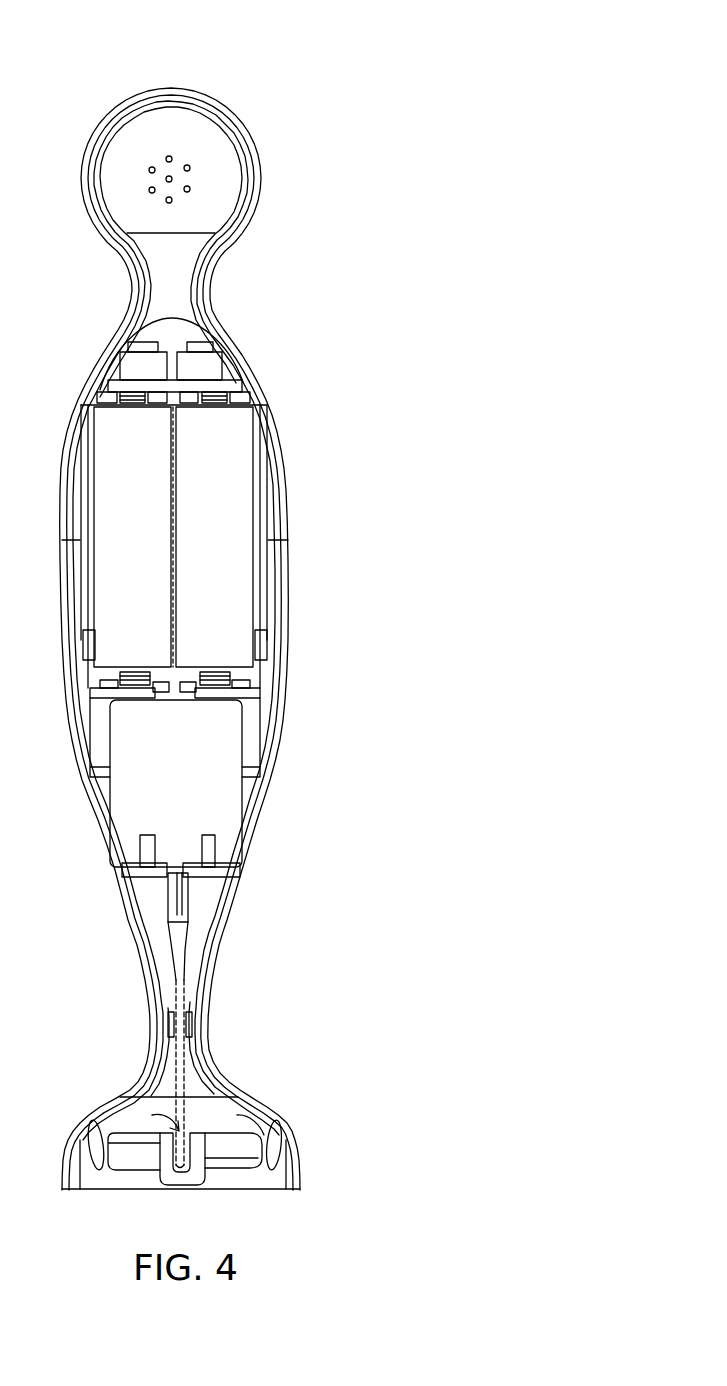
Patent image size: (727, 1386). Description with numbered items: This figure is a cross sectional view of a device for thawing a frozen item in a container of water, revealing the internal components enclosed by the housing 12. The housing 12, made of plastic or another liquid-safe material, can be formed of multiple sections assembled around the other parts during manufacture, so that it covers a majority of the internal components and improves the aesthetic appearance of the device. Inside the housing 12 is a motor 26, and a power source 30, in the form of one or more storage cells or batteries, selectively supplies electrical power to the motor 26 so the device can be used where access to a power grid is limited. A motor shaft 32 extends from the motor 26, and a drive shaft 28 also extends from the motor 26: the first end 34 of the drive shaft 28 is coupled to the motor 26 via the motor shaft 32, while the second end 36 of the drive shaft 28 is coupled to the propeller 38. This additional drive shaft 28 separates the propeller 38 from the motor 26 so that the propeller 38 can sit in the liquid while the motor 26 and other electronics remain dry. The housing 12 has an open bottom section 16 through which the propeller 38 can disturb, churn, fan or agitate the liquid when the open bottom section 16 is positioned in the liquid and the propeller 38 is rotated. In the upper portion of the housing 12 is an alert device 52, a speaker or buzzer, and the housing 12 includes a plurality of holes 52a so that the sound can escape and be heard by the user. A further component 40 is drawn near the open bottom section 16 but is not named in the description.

The housing 12 is at (247, 344).
The open bottom section 16 is at (267, 1097).
The motor 26 is at (217, 748).
The drive shaft 28 is at (178, 990).
The power source 30 is at (228, 488).
The motor shaft 32 is at (178, 890).
The first end 34 is at (178, 928).
The second end 36 is at (186, 1130).
The propeller 38 is at (227, 1150).
The pivot member 40 is at (288, 1156).
The alert device 52 is at (184, 148).
The holes 52a is at (190, 168).